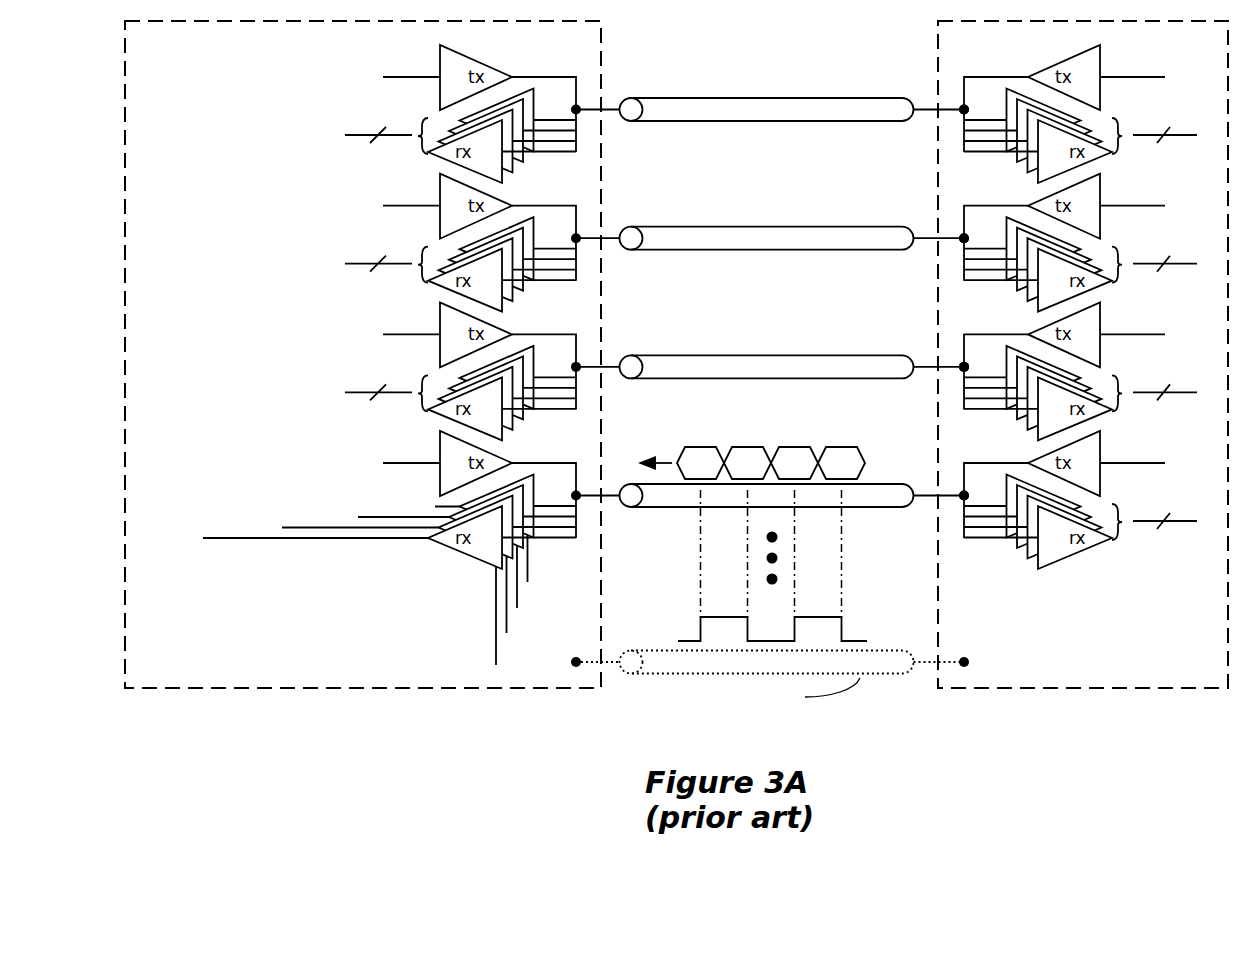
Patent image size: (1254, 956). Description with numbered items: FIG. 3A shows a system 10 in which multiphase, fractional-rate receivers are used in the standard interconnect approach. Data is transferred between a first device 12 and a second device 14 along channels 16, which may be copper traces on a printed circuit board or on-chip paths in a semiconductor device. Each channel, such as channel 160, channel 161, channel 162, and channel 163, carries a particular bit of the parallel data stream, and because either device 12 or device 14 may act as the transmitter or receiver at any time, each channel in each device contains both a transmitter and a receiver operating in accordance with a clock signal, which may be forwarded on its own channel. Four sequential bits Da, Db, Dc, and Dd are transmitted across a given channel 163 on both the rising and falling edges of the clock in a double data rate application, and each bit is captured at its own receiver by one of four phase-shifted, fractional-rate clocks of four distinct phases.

The system 10 is at (258, 776).
The first device 12 is at (601, 68).
The second device 14 is at (938, 66).
The channels 16 is at (754, 34).
The channel 160 is at (828, 122).
The channel 161 is at (828, 251).
The channel 162 is at (828, 379).
The channel 163 is at (913, 503).